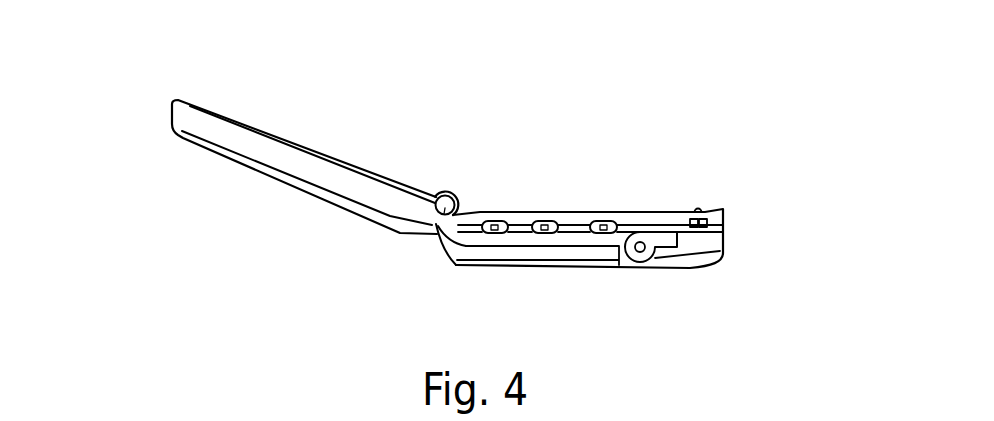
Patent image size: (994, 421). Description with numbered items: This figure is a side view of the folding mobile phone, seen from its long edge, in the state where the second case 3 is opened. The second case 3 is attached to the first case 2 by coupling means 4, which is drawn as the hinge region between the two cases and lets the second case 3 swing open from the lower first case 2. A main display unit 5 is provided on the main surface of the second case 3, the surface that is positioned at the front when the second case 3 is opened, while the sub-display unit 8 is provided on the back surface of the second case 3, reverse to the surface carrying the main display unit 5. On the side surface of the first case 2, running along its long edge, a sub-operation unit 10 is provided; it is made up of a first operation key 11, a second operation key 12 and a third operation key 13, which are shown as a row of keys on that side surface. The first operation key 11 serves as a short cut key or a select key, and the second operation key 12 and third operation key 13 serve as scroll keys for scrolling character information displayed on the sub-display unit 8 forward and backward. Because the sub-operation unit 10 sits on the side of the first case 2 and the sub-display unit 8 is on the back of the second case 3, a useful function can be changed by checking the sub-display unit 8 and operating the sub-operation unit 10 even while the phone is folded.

The first case 2 is at (700, 240).
The second case 3 is at (188, 123).
The coupling means 4 is at (437, 223).
The main display unit 5 is at (305, 147).
The sub-display unit 8 is at (303, 193).
The sub-operation unit 10 is at (671, 134).
The first operation key 11 is at (547, 219).
The second operation key 12 is at (602, 219).
The third operation key 13 is at (490, 220).